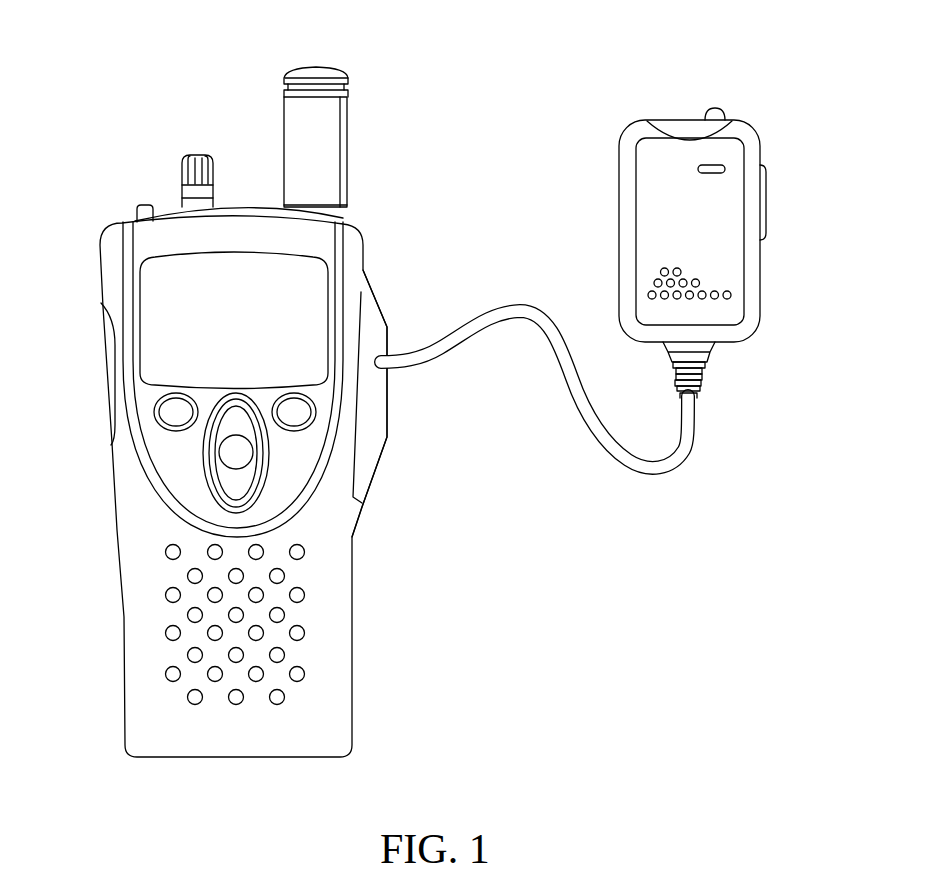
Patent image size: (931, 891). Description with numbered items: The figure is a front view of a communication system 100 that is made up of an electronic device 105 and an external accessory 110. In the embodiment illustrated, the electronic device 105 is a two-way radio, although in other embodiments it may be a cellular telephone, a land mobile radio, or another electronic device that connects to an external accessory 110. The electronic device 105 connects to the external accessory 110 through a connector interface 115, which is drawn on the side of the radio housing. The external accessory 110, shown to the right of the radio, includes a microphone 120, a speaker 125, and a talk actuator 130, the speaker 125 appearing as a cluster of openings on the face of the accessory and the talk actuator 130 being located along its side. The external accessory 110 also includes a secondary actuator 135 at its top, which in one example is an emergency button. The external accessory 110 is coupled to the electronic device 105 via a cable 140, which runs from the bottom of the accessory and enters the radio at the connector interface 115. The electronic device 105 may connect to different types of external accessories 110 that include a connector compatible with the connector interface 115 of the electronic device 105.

The communication system 100 is at (114, 44).
The electronic device 105 is at (354, 631).
The external accessory 110 is at (756, 333).
The connector interface 115 is at (388, 402).
The microphone 120 is at (698, 169).
The speaker 125 is at (655, 283).
The talk actuator 130 is at (767, 202).
The secondary actuator 135 is at (713, 107).
The cable 140 is at (656, 475).